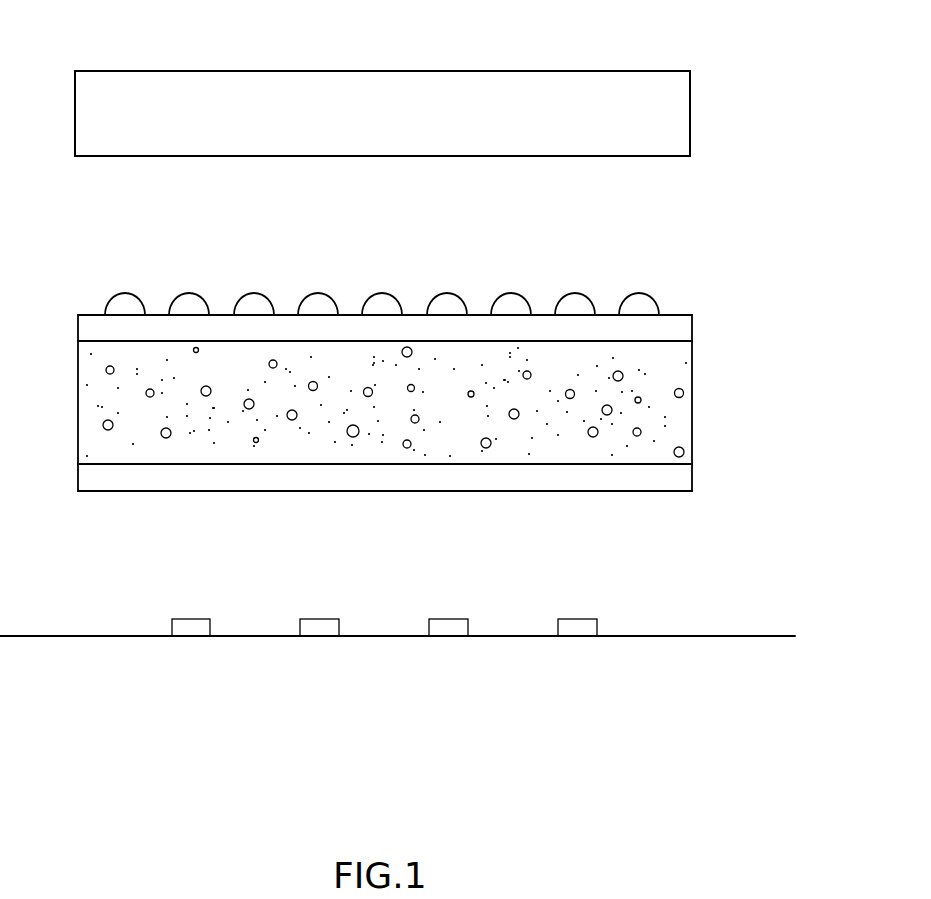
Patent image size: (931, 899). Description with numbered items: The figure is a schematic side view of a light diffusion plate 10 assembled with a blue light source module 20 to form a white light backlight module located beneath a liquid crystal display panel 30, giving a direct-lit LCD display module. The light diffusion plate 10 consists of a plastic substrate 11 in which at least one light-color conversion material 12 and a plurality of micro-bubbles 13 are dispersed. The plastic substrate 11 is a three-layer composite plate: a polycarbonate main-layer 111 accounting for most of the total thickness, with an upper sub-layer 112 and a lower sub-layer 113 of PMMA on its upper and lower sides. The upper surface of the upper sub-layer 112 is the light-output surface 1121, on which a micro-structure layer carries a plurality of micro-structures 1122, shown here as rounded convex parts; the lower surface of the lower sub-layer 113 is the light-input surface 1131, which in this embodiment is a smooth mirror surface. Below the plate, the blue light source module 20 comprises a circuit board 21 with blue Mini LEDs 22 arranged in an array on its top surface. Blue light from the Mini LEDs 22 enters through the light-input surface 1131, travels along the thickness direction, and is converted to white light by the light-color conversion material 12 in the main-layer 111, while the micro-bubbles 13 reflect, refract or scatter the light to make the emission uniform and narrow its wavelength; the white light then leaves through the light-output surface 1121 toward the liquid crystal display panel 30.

The light diffusion plate 10 is at (414, 381).
The plastic substrate 11 is at (411, 381).
The light-color conversion material 12 is at (142, 356).
The micro-bubbles 13 is at (146, 393).
The blue light source module 20 is at (412, 624).
The circuit board 21 is at (655, 638).
The blue Mini LEDs 22 is at (440, 627).
The liquid crystal display panel 30 is at (710, 91).
The main-layer 111 is at (384, 401).
The upper sub-layer 112 is at (422, 284).
The lower sub-layer 113 is at (426, 500).
The light-output surface 1121 is at (677, 311).
The micro-structures 1122 is at (511, 300).
The light-input surface 1131 is at (689, 493).